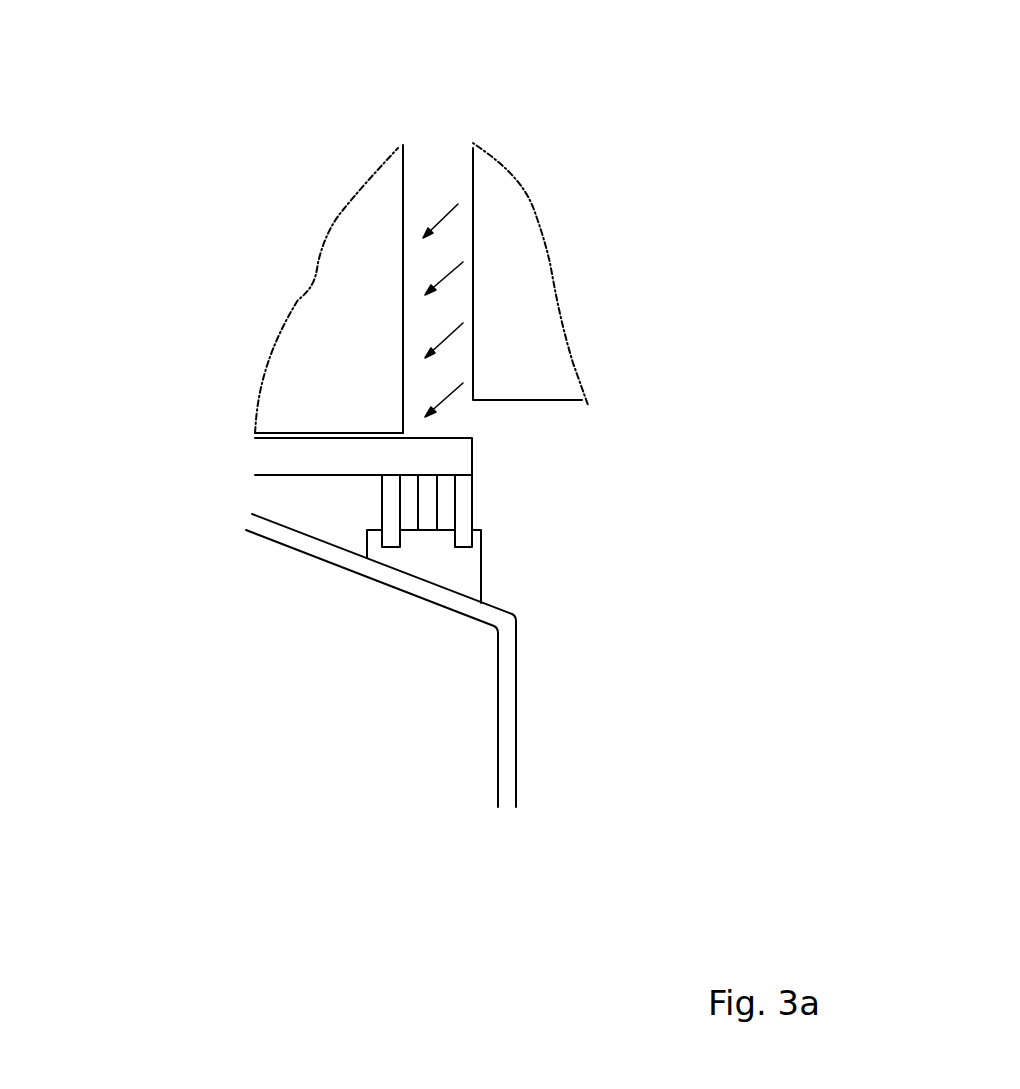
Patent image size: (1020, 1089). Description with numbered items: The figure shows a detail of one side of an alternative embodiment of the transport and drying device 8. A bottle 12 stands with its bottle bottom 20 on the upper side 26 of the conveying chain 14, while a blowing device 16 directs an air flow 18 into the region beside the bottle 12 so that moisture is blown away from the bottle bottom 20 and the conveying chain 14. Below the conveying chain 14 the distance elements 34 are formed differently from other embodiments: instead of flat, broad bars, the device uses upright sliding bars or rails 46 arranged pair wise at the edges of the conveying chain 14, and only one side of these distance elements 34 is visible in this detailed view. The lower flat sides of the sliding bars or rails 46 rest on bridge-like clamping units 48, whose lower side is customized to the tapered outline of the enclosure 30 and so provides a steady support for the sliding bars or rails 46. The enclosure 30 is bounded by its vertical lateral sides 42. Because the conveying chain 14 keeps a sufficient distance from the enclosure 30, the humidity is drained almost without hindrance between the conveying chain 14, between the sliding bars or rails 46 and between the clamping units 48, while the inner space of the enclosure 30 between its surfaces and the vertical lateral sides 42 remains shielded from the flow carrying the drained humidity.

The transport and drying device 8 is at (406, 411).
The bottle 12 is at (362, 352).
The conveying chain 14 is at (502, 446).
The blowing device 16 is at (599, 274).
The air flow 18 is at (531, 216).
The bottle bottom 20 is at (226, 395).
The upper side 26 is at (226, 395).
The enclosure 30 is at (504, 660).
The vertical lateral side 42 is at (504, 660).
The distance element 34 is at (558, 549).
The sliding bar or rail (pair wise) 46 is at (566, 511).
The clamping unit 48 is at (557, 577).